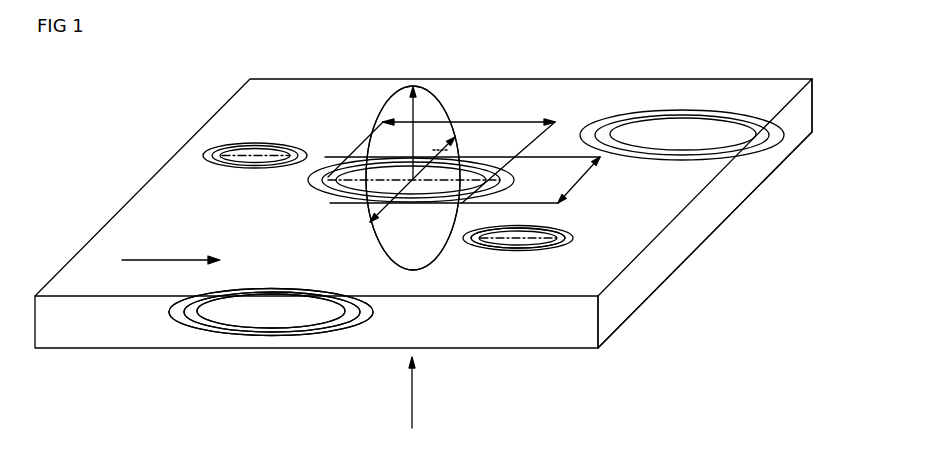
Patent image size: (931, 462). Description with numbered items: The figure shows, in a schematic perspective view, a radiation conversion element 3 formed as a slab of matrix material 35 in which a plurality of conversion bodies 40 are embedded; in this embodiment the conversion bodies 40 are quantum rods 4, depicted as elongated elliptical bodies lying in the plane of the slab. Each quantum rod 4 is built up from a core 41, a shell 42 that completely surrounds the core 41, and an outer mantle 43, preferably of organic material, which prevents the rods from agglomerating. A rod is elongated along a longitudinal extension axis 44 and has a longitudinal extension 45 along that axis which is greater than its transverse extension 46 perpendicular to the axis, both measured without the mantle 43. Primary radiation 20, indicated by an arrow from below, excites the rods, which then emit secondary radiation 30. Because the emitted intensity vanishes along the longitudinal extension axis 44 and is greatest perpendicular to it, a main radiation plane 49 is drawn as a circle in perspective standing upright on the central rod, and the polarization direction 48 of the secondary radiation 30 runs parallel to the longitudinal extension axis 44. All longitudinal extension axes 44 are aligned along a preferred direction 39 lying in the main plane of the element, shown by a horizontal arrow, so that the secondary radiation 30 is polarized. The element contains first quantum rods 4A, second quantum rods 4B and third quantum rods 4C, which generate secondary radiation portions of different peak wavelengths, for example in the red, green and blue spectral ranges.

The radiation conversion element 3 is at (735, 188).
The matrix material 35 is at (665, 267).
The preferred direction 39 is at (165, 258).
The primary radiation 20 is at (413, 392).
The secondary radiation 30 is at (400, 90).
The main radiation plane 49 is at (387, 102).
The quantum rods 4 is at (313, 315).
The first quantum rods 4A is at (330, 313).
The second quantum rods 4B is at (505, 245).
The third quantum rods 4C is at (258, 146).
The conversion bodies 40 is at (277, 322).
The core 41 is at (265, 305).
The shell 42 is at (193, 315).
The mantle 43 is at (178, 317).
The longitudinal extension axis 44 is at (443, 185).
The longitudinal extension 45 is at (518, 120).
The transverse extension 46 is at (585, 178).
The polarization direction 48 is at (437, 145).